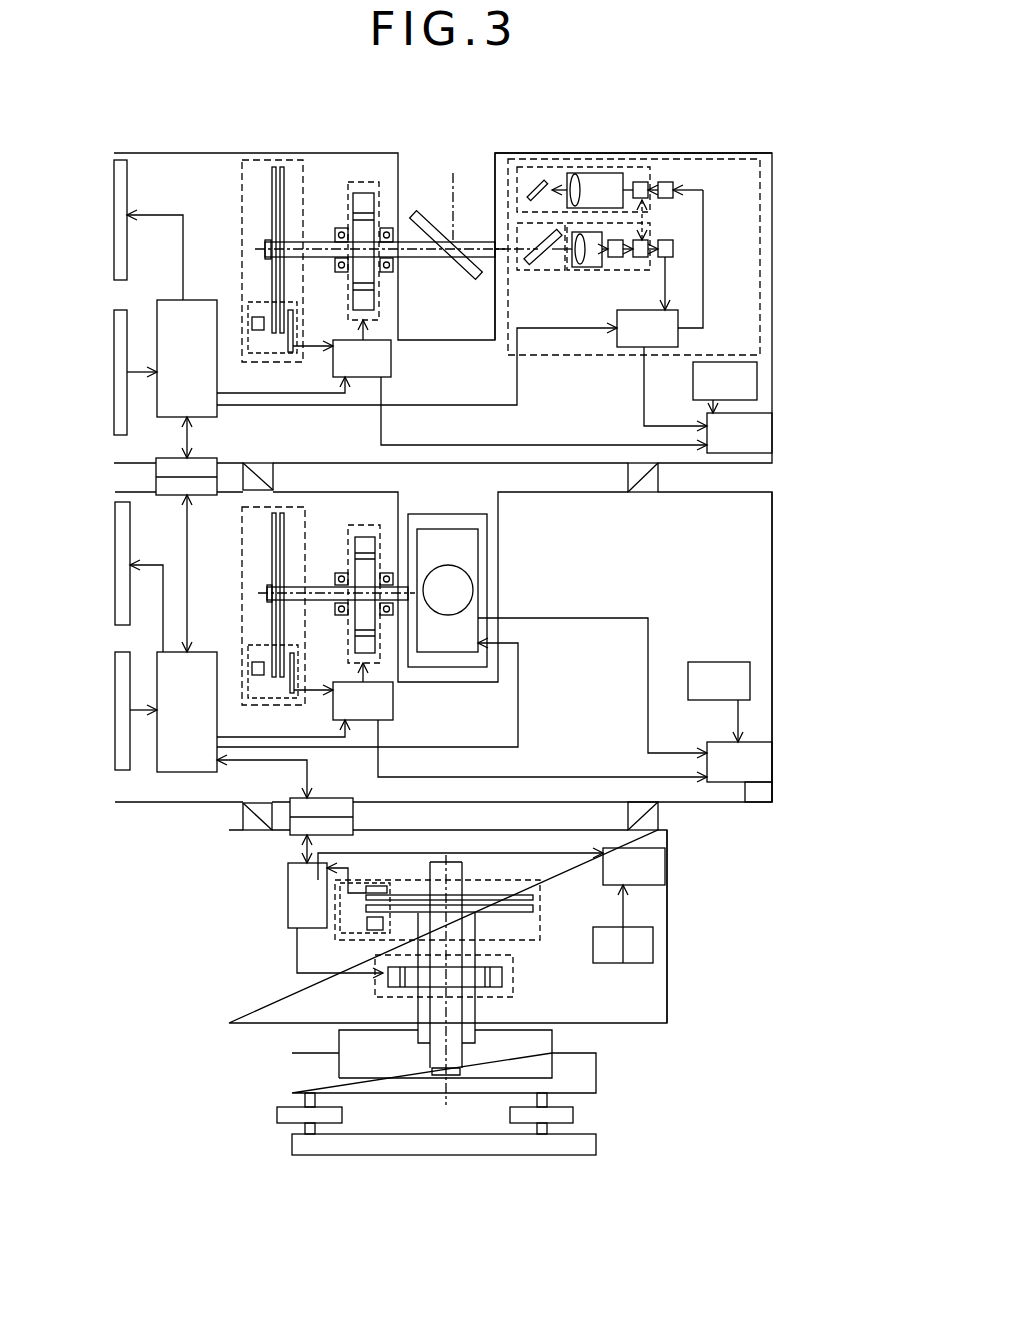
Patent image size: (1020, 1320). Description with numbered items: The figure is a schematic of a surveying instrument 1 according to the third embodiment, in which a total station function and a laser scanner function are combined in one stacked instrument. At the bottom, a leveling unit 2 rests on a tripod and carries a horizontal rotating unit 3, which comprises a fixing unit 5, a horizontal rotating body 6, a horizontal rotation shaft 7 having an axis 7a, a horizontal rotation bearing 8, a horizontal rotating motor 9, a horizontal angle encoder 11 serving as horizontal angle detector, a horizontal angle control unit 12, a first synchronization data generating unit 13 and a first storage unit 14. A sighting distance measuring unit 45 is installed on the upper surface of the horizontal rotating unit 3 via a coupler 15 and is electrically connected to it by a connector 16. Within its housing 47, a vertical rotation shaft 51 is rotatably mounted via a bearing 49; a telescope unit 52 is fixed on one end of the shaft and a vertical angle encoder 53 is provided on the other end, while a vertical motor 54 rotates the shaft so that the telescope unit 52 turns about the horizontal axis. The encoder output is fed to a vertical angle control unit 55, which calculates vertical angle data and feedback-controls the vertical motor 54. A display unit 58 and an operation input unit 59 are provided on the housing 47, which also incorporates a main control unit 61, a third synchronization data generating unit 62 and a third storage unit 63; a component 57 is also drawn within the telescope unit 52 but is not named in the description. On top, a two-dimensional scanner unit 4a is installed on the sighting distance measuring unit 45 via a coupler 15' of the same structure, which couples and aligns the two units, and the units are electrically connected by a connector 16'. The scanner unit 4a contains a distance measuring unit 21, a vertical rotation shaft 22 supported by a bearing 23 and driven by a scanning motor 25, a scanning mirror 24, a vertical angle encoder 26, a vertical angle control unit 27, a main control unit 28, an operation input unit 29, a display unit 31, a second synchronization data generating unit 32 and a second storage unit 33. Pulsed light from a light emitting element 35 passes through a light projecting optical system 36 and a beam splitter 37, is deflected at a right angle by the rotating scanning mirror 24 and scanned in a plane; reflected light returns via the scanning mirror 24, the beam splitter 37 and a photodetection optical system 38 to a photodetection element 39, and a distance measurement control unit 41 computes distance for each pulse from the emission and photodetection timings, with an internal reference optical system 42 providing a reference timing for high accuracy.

The surveying instrument 1 is at (368, 112).
The leveling unit 2 is at (596, 1072).
The horizontal rotating unit 3 is at (668, 950).
The two-dimensional scanner unit 4a is at (541, 151).
The fixing unit 5 is at (552, 1035).
The horizontal rotating body 6 is at (229, 962).
The horizontal rotation shaft 7 is at (465, 863).
The axis 7a is at (476, 927).
The horizontal rotation bearing 8 is at (473, 1010).
The horizontal rotating motor 9 is at (375, 985).
The horizontal angle encoder 11 is at (540, 905).
The horizontal angle control unit 12 is at (288, 908).
The first synchronization data generating unit 13 is at (611, 963).
The first storage unit 14 is at (653, 885).
The coupler 15 is at (211, 822).
The coupler 15' is at (720, 477).
The connector 16 is at (265, 850).
The connector 16' is at (139, 534).
The distance measuring unit 21 is at (680, 153).
The vertical rotation shaft 22 is at (328, 258).
The bearing 23 is at (342, 228).
The scanning mirror 24 is at (424, 218).
The scanning motor 25 is at (363, 182).
The vertical angle encoder 26 is at (242, 215).
The vertical angle control unit 27 is at (391, 362).
The main control unit 28 is at (170, 300).
The operation input unit 29 is at (114, 372).
The display unit 31 is at (114, 212).
The second synchronization data generating unit 32 is at (693, 397).
The second storage unit 33 is at (753, 413).
The light emitting element 35 is at (672, 180).
The light projecting optical system 36 is at (589, 167).
The beam splitter 37 is at (547, 272).
The photodetection optical system 38 is at (610, 272).
The photodetection element 39 is at (673, 257).
The distance measurement control unit 41 is at (678, 321).
The internal reference optical system 42 is at (646, 214).
The sighting distance measuring unit 45 is at (541, 490).
The housing 47 is at (772, 607).
The bearing 49 is at (342, 573).
The vertical rotation shaft 51 is at (328, 600).
The telescope unit 52 is at (436, 514).
The vertical angle encoder 53 is at (242, 565).
The vertical motor 54 is at (360, 455).
The vertical angle control unit 55 is at (393, 700).
The sensor 57 is at (471, 580).
The display unit 58 is at (118, 572).
The operation input unit 59 is at (118, 728).
The main control unit 61 is at (190, 652).
The third synchronization data generating unit 62 is at (723, 662).
The third storage unit 63 is at (745, 803).